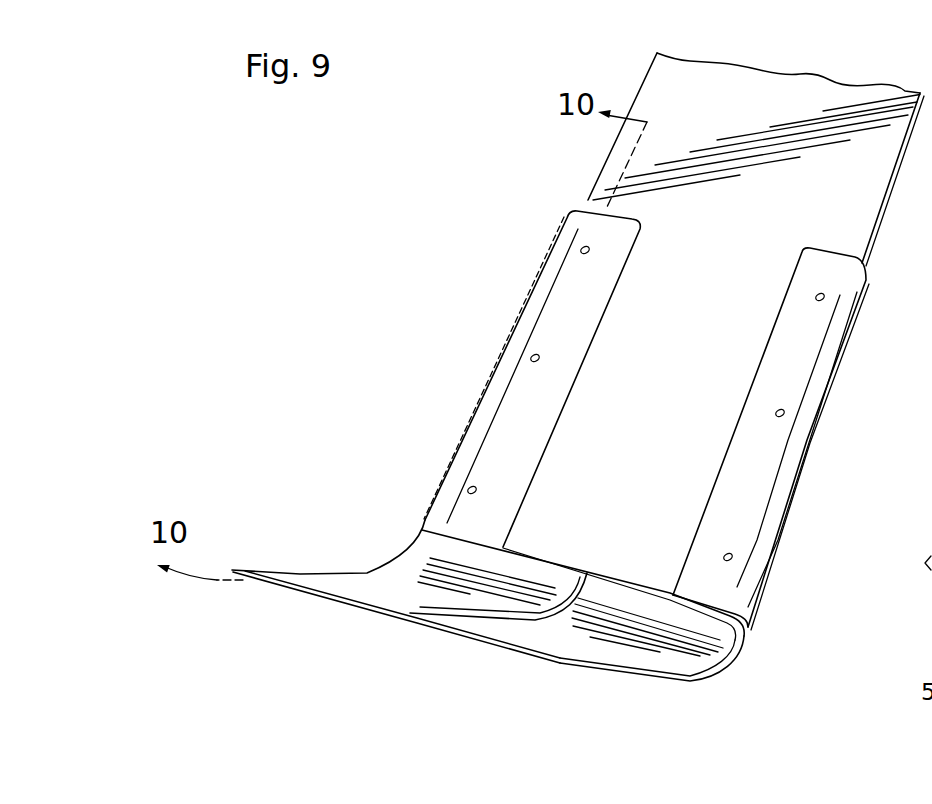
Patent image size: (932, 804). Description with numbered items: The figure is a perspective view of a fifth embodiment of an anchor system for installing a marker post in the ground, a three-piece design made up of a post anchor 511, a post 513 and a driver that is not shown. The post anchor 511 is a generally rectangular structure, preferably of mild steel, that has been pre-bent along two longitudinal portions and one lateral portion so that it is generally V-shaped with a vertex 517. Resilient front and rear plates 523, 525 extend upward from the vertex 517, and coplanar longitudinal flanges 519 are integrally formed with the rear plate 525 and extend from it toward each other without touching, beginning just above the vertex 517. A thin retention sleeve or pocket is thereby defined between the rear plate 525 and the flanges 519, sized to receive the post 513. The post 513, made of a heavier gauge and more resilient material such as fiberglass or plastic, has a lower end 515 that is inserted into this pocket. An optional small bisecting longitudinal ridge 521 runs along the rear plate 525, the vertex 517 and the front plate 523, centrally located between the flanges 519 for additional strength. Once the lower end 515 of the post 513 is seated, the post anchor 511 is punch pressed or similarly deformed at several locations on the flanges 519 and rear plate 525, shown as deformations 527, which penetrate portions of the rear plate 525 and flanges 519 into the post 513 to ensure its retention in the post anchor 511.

The post anchor 511 is at (440, 143).
The post 513 is at (752, 88).
The lower end 515 is at (627, 577).
The vertex 517 is at (692, 617).
The longitudinal flanges 519 is at (551, 322).
The longitudinal ridge 521 is at (476, 604).
The front plate 523 is at (327, 588).
The rear plate 525 is at (740, 646).
The deformations 527 is at (581, 248).